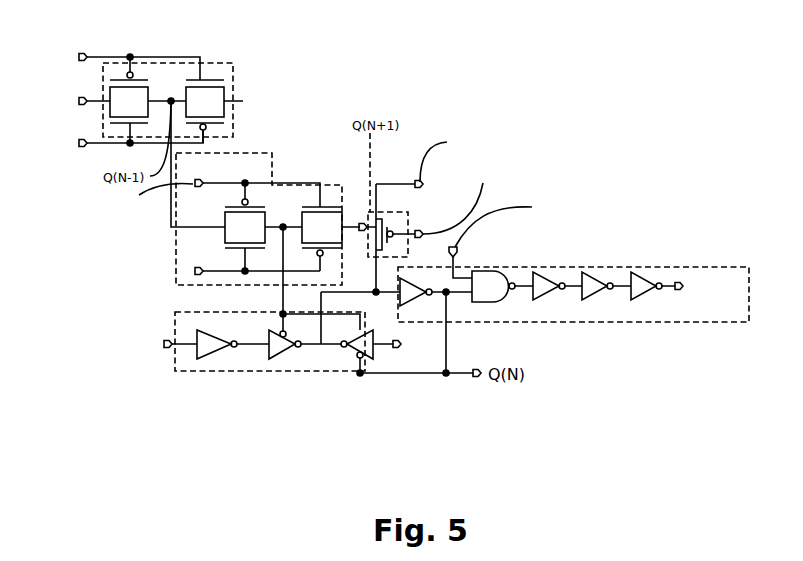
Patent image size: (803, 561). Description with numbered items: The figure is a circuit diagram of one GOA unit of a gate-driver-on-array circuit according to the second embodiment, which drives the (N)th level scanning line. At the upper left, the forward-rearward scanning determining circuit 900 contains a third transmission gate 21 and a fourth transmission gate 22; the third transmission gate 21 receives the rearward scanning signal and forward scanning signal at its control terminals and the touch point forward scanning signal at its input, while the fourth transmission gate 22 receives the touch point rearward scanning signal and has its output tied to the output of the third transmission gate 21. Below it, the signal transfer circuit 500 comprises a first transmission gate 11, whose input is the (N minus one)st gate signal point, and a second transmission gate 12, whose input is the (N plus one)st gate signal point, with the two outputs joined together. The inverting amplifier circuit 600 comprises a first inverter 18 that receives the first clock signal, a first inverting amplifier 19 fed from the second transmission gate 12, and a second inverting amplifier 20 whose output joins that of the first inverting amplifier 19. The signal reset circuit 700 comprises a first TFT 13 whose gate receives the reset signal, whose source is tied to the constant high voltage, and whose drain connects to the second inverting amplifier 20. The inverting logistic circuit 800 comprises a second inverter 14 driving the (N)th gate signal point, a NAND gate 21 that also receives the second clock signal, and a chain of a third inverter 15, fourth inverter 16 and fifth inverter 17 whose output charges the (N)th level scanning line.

The first transmission gate 11 is at (224, 212).
The second transmission gate 12 is at (342, 212).
The first TFT 13 is at (383, 219).
The second inverter 14 is at (413, 298).
The third inverter 15 is at (545, 272).
The fourth inverter 16 is at (594, 272).
The fifth inverter 17 is at (641, 272).
The first inverter 18 is at (210, 352).
The first inverting amplifier 19 is at (270, 350).
The second inverting amplifier 20 is at (350, 347).
The third transmission gate 21 is at (110, 85).
The fourth transmission gate 22 is at (232, 90).
The signal transfer circuit 500 is at (242, 224).
The inverting amplifier circuit 600 is at (264, 366).
The signal reset circuit 700 is at (446, 192).
The inverting logistic circuit 800 is at (573, 300).
The forward-rearward scanning determining circuit 900 is at (268, 165).